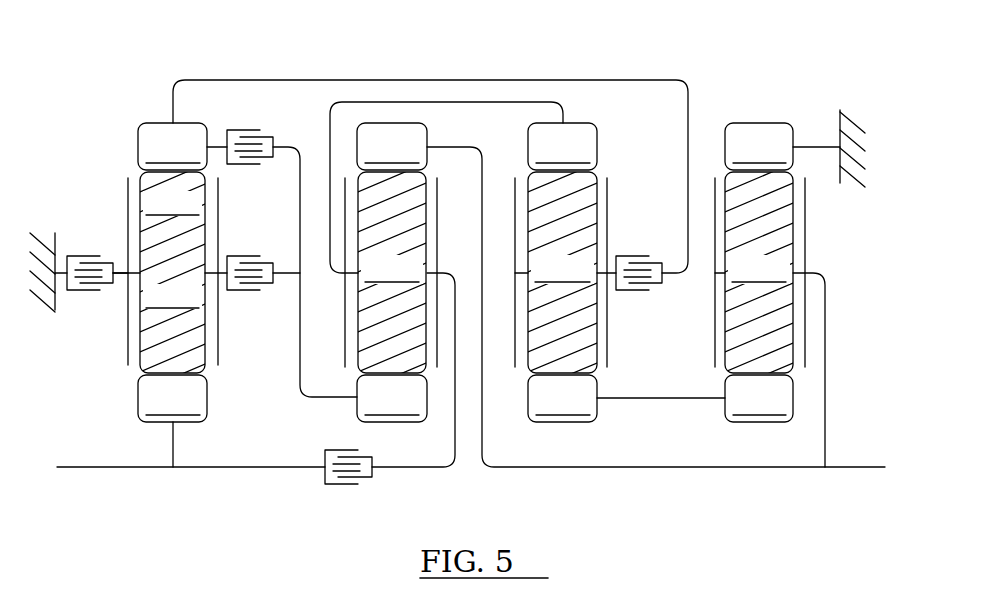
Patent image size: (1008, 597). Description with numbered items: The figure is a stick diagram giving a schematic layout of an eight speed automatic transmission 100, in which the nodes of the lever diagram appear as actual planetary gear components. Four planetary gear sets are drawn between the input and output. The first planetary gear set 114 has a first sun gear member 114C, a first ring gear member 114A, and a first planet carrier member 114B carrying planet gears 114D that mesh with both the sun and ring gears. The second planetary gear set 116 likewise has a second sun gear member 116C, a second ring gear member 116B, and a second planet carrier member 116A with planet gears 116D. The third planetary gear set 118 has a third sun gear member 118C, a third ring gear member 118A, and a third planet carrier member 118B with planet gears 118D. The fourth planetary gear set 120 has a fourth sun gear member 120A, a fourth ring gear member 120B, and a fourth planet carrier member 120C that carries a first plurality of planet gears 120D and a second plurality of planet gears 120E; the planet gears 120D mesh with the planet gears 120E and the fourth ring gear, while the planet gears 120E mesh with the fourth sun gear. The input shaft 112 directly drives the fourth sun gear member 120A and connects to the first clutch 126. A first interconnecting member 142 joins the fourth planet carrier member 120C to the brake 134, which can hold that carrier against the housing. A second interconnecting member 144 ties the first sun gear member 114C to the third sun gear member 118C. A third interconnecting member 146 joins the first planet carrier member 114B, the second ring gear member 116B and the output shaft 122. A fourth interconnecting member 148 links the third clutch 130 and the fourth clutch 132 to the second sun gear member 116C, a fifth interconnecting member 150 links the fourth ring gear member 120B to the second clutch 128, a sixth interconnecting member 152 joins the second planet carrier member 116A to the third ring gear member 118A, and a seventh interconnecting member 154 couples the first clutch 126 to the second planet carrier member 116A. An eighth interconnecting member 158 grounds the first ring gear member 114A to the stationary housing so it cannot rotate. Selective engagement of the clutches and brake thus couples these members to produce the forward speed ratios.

The eight speed transmission 100 is at (788, 66).
The input shaft 112 is at (93, 469).
The first planetary gear set 114 is at (790, 292).
The first ring gear member 114A is at (759, 146).
The first planet carrier member 114B is at (808, 266).
The first sun gear member 114C is at (759, 398).
The planet gears 114D is at (759, 269).
The second planetary gear set 116 is at (363, 326).
The second planet carrier member 116A is at (345, 328).
The second ring gear member 116B is at (392, 146).
The second sun gear member 116C is at (392, 398).
The planet gears 116D is at (392, 269).
The third planetary gear set 118 is at (591, 292).
The third ring gear member 118A is at (562, 146).
The third planet carrier member 118B is at (610, 185).
The third sun gear member 118C is at (562, 398).
The planet gears 118D is at (562, 269).
The fourth planetary gear set 120 is at (165, 295).
The fourth sun gear member 120A is at (172, 398).
The fourth ring gear member 120B is at (172, 146).
The fourth planet carrier member 120C is at (126, 188).
The first plurality of planet gears 120D is at (172, 203).
The second plurality of planet gears 120E is at (172, 296).
The output shaft 122 is at (862, 470).
The first clutch 126 is at (343, 486).
The second clutch 128 is at (648, 256).
The third clutch 130 is at (262, 130).
The fourth clutch 132 is at (249, 256).
The brake 134 is at (91, 256).
The first interconnecting member 142 is at (118, 287).
The second interconnecting member 144 is at (663, 397).
The third interconnecting member 146 is at (480, 258).
The fourth interconnecting member 148 is at (298, 320).
The fifth interconnecting member 150 is at (370, 80).
The sixth interconnecting member 152 is at (453, 104).
The seventh interconnecting member 154 is at (461, 392).
The eighth interconnecting member 158 is at (818, 146).